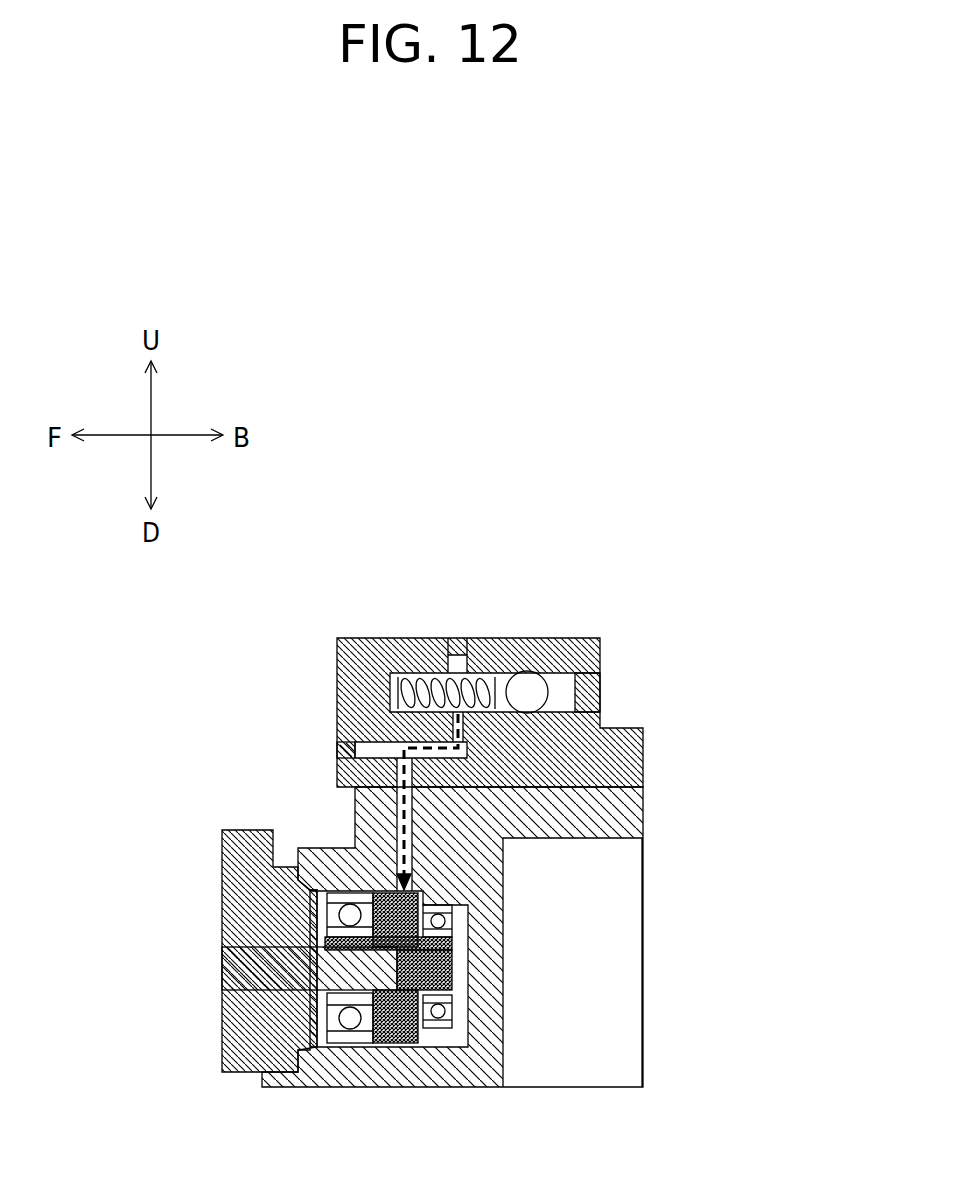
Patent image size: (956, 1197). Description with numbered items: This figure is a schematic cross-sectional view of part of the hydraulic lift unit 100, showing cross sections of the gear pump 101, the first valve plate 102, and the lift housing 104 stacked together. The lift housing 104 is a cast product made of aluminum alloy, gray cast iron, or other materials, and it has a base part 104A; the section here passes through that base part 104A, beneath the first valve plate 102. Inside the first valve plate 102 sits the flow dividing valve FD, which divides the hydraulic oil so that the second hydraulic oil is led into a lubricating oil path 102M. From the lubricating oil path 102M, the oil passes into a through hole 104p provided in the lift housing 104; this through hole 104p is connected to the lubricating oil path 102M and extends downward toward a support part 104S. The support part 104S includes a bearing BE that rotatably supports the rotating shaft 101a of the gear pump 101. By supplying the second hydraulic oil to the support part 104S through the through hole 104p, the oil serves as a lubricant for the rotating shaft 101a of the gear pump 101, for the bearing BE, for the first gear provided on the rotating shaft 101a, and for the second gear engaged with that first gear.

The hydraulic lift unit 100 is at (700, 535).
The gear pump 101 is at (233, 882).
The rotating shaft 101a is at (280, 972).
The first valve plate 102 is at (604, 662).
The lubricating oil path 102M is at (340, 746).
The lift housing 104 is at (541, 937).
The base part 104A is at (612, 824).
The through hole 104p is at (390, 814).
The support part 104S is at (437, 890).
The flow dividing valve FD is at (432, 678).
The bearing BE is at (357, 1045).